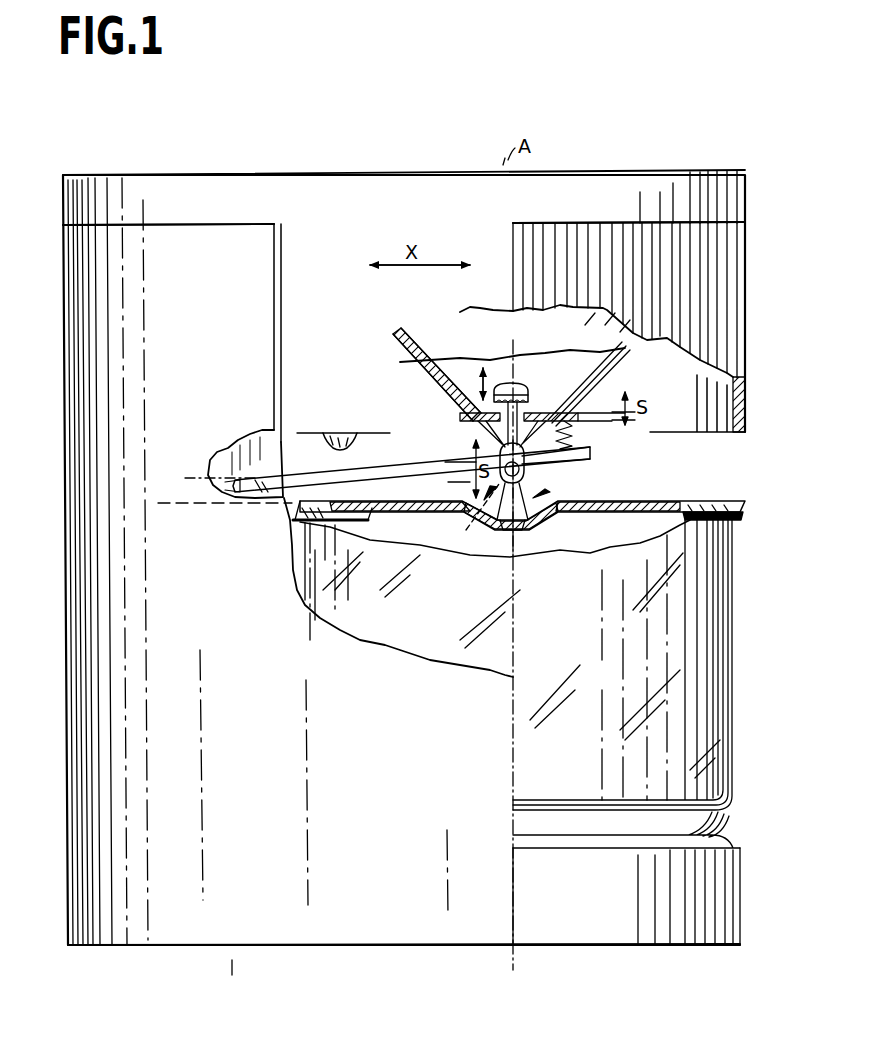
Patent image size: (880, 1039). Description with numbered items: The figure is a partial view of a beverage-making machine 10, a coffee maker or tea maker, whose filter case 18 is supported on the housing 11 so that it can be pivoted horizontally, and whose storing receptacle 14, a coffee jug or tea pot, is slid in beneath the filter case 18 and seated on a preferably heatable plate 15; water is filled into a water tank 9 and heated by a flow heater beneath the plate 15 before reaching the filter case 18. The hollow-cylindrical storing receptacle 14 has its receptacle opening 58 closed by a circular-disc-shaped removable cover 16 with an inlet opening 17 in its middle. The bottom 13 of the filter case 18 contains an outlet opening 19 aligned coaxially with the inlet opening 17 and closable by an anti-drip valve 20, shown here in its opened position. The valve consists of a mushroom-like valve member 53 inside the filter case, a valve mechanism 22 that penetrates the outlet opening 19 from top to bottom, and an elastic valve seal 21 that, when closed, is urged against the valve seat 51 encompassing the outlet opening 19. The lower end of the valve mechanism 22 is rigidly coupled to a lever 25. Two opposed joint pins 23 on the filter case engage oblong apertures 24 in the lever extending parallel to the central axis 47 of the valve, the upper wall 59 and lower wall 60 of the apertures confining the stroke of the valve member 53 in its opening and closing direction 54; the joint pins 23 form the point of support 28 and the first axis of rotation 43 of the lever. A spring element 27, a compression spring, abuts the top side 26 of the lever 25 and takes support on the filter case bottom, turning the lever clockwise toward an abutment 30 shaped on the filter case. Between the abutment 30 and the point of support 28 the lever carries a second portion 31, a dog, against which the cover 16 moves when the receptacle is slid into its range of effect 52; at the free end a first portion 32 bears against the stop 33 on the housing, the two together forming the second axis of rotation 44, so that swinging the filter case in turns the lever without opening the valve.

The water tank 9 is at (108, 398).
The beverage-making machine 10 is at (472, 918).
The housing 11 is at (540, 200).
The bottom 13 is at (553, 411).
The storing receptacle 14 is at (703, 672).
The heatable plate 15 is at (706, 832).
The removable cover 16 is at (740, 500).
The inlet opening 17 is at (538, 496).
The filter case 18 is at (735, 363).
The outlet opening 19 is at (485, 436).
The anti-drip valve 20 is at (500, 378).
The valve seal 21 is at (462, 410).
The valve mechanism 22 is at (500, 447).
The joint pins 23 is at (532, 462).
The oblong aperture 24 is at (540, 474).
The lever 25 is at (288, 490).
The top side 26 is at (318, 480).
The spring element 27 is at (578, 438).
The point of support 28 is at (479, 518).
The abutment 30 is at (348, 432).
The second portion 31 is at (408, 515).
The first portion 32 is at (262, 488).
The stop 33 is at (248, 442).
The first axis of rotation 43 is at (518, 500).
The second axis of rotation 44 is at (232, 468).
The central axis 47 is at (508, 352).
The valve seat 51 is at (527, 425).
The range of effect 52 is at (192, 503).
The valve member 53 is at (525, 388).
The opening and closing direction 54 is at (480, 386).
The receptacle opening 58 is at (620, 530).
The upper wall 59 is at (490, 460).
The lower wall 60 is at (506, 518).